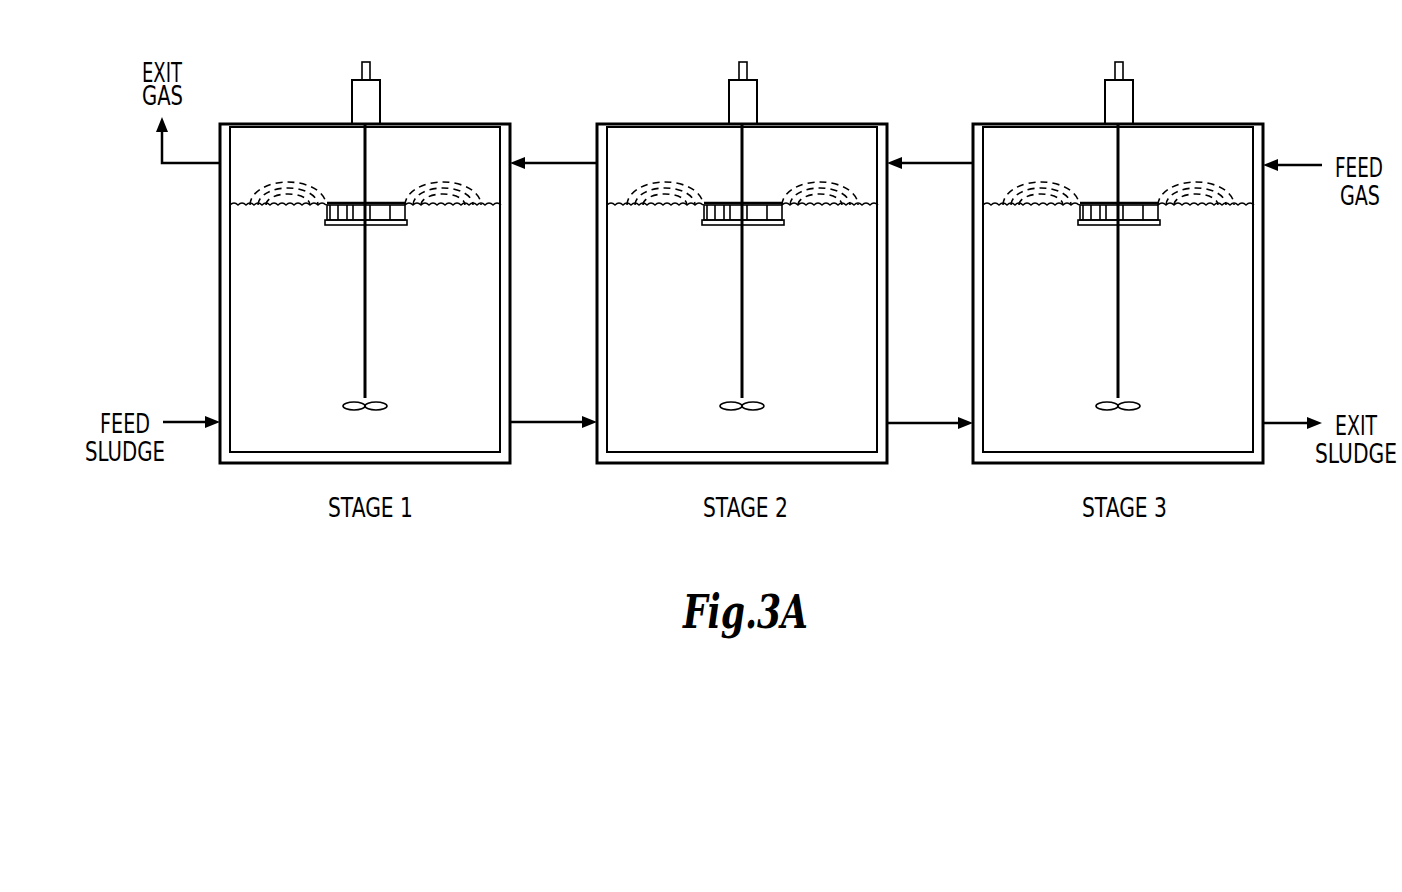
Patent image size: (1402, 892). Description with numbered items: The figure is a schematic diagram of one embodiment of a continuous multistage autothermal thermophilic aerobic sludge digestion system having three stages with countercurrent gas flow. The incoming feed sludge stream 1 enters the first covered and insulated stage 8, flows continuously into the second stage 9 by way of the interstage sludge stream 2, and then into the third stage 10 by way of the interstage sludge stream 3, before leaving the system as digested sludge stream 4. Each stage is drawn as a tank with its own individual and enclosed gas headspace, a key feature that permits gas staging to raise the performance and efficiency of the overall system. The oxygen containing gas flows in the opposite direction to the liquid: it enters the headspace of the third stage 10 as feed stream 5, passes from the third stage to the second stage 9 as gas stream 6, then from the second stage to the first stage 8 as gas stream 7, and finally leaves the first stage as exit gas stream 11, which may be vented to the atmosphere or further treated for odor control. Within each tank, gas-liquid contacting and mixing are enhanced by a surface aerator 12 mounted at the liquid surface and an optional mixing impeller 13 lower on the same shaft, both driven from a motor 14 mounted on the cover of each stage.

The feed sludge stream 1 is at (191, 408).
The sludge stream from stage 1 to stage 2 is at (553, 409).
The sludge stream from stage 2 to stage 3 is at (930, 410).
The digested sludge stream 4 is at (1292, 410).
The feed stream 5 is at (1292, 150).
The gas stream from stage 3 to stage 2 6 is at (930, 149).
The gas stream from stage 2 to stage 1 7 is at (553, 148).
The first stage 8 is at (365, 293).
The second stage 9 is at (742, 293).
The third stage 10 is at (1118, 293).
The exit gas stream 11 is at (188, 140).
The surface aerator 12 is at (742, 197).
The mixing impeller 13 is at (741, 287).
The agitator motor 14 is at (759, 93).